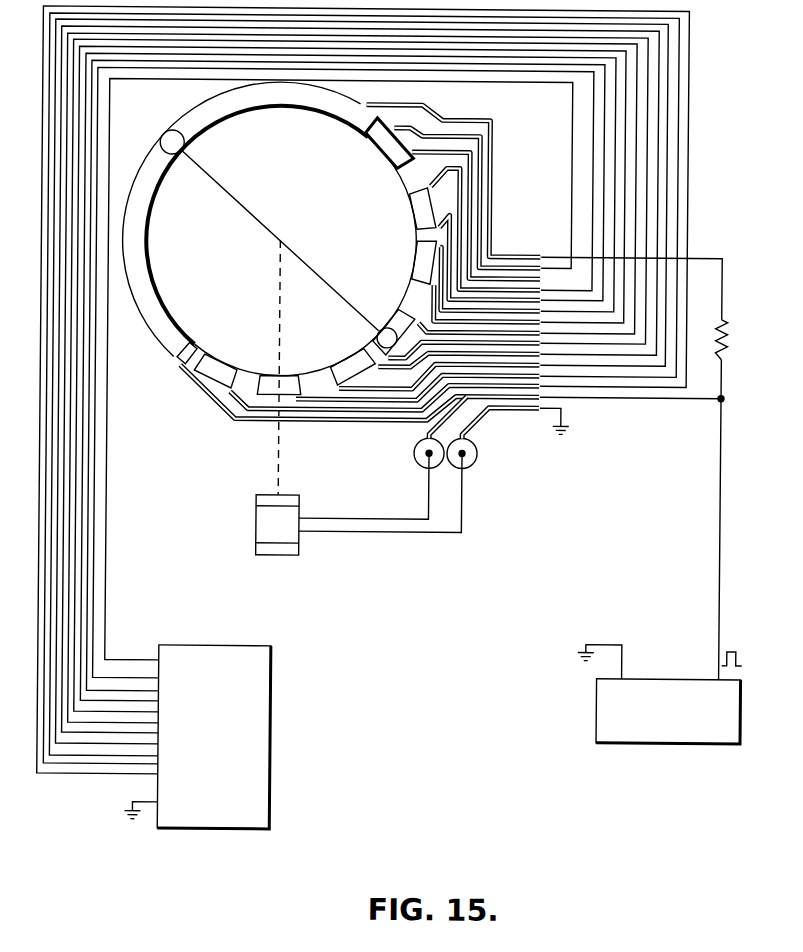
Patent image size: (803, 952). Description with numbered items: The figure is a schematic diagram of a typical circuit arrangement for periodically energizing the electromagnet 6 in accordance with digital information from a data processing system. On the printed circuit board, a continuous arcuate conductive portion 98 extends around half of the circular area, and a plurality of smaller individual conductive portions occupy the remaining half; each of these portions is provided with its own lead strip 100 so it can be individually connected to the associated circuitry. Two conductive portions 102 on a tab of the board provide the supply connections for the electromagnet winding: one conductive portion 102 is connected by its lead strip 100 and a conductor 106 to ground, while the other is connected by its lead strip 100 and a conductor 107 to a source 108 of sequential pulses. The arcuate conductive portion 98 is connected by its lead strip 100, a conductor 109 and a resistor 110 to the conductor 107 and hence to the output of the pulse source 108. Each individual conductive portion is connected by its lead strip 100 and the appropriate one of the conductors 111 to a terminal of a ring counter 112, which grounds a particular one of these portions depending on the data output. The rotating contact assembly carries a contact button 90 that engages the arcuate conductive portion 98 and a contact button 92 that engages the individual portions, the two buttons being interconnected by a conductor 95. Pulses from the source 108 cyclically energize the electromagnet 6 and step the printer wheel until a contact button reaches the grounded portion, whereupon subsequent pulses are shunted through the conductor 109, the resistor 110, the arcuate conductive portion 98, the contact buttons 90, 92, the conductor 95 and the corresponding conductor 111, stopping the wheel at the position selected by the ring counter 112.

The electromagnet 6 is at (256, 530).
The contact button 90 is at (184, 144).
The contact button 92 is at (387, 327).
The conductor 95 is at (250, 217).
The arcuate conductive portion 98 is at (264, 108).
The lead strip 100 is at (482, 155).
The conductive portion 102 is at (464, 463).
The conductor 106 is at (564, 425).
The conductor 107 is at (722, 511).
The pulse source 108 is at (601, 727).
The conductor 109 is at (726, 276).
The resistor 110 is at (728, 333).
The conductors 111 is at (668, 47).
The ring counter 112 is at (206, 830).